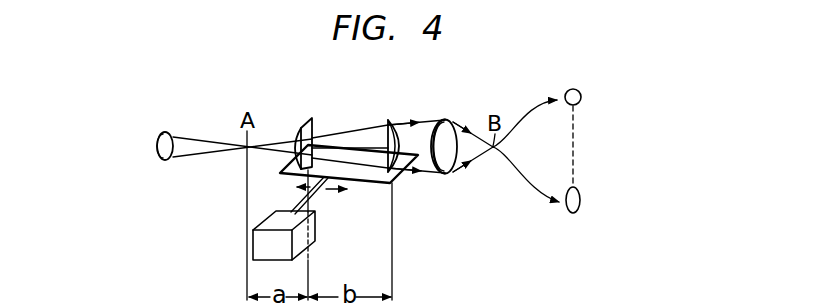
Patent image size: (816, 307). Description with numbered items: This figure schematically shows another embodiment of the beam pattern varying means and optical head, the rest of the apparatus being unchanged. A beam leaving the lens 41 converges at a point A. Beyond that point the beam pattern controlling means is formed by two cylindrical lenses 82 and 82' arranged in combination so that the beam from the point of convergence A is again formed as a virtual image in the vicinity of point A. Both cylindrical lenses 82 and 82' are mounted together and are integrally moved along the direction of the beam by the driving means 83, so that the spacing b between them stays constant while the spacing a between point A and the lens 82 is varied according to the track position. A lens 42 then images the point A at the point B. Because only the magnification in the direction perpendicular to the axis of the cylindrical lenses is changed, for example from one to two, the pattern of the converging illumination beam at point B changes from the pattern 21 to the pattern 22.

The lens 41 is at (163, 132).
The cylindrical lens 82 is at (307, 120).
The cylindrical lens 82' is at (389, 120).
The lens 42 is at (447, 119).
The driving means 83 is at (254, 243).
The beam pattern 21 is at (578, 91).
The beam pattern 22 is at (580, 200).